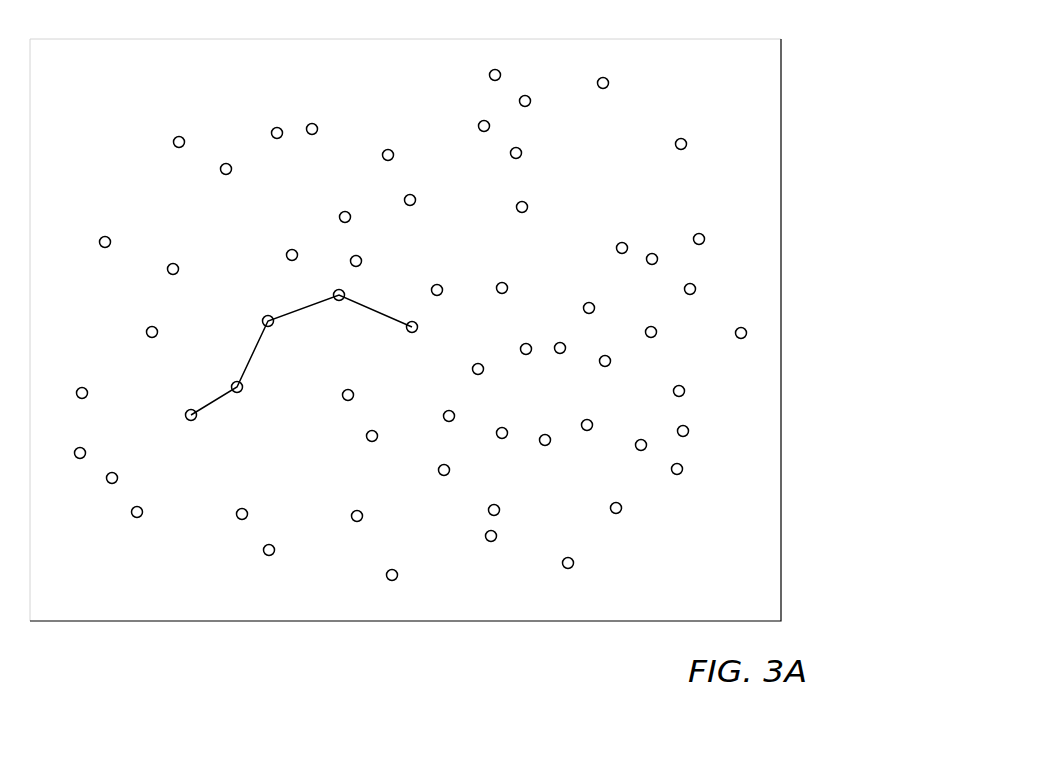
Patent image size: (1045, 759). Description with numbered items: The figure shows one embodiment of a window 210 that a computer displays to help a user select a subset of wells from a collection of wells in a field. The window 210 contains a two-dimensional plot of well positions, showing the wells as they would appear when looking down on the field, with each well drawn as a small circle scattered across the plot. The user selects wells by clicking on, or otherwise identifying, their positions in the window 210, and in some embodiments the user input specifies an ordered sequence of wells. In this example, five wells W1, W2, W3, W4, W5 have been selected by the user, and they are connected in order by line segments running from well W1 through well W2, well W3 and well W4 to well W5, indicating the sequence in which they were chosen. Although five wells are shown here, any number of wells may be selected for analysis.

The window 210 is at (781, 288).
The well W1 is at (174, 426).
The well W2 is at (254, 400).
The well W3 is at (250, 314).
The well W4 is at (339, 312).
The well W5 is at (412, 342).